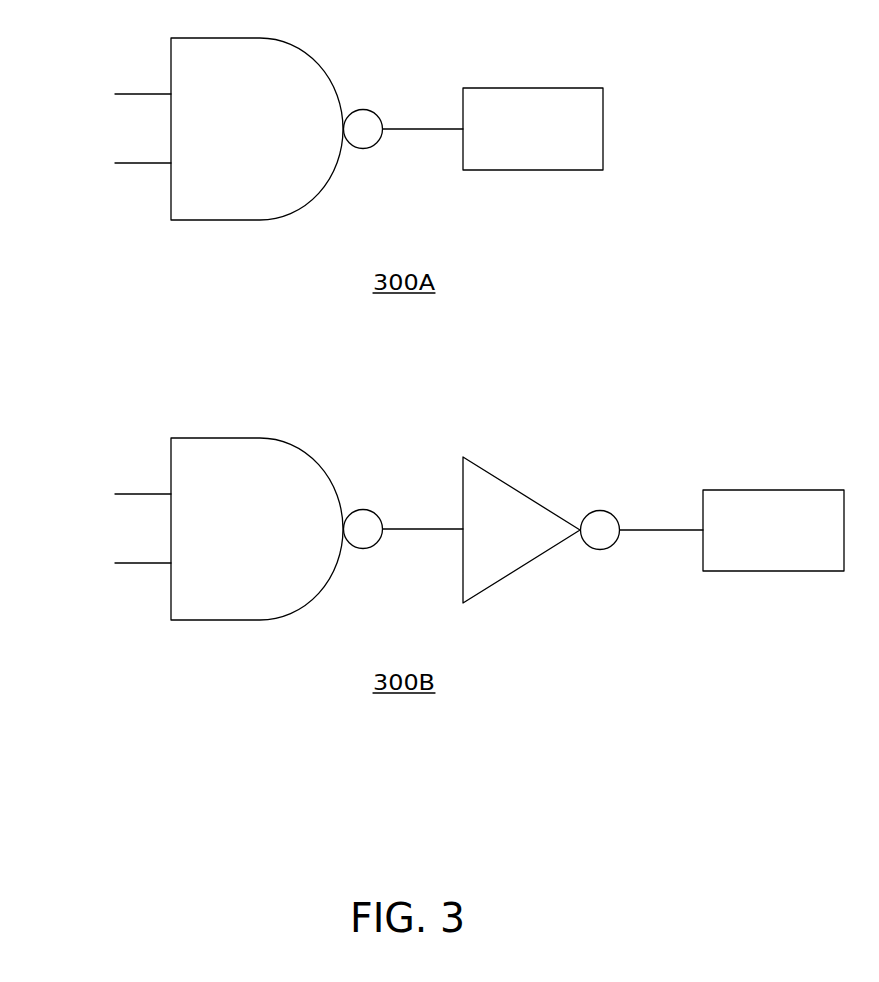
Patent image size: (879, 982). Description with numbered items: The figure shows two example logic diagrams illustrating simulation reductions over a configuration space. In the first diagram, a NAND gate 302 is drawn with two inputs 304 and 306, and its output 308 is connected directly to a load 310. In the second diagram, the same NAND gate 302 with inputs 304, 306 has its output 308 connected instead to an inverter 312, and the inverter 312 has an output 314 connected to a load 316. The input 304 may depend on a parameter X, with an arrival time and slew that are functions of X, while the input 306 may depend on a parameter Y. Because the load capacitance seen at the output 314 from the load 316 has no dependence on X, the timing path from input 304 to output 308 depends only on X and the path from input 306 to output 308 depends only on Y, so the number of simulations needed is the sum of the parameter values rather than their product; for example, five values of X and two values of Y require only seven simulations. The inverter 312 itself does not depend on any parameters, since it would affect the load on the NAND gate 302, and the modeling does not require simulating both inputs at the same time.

The NAND gate 302 is at (193, 221).
The input 304 is at (130, 97).
The input 306 is at (130, 166).
The output 308 is at (421, 127).
The load 310 is at (580, 88).
The inverter 312 is at (507, 480).
The output 314 is at (647, 530).
The load 316 is at (750, 490).